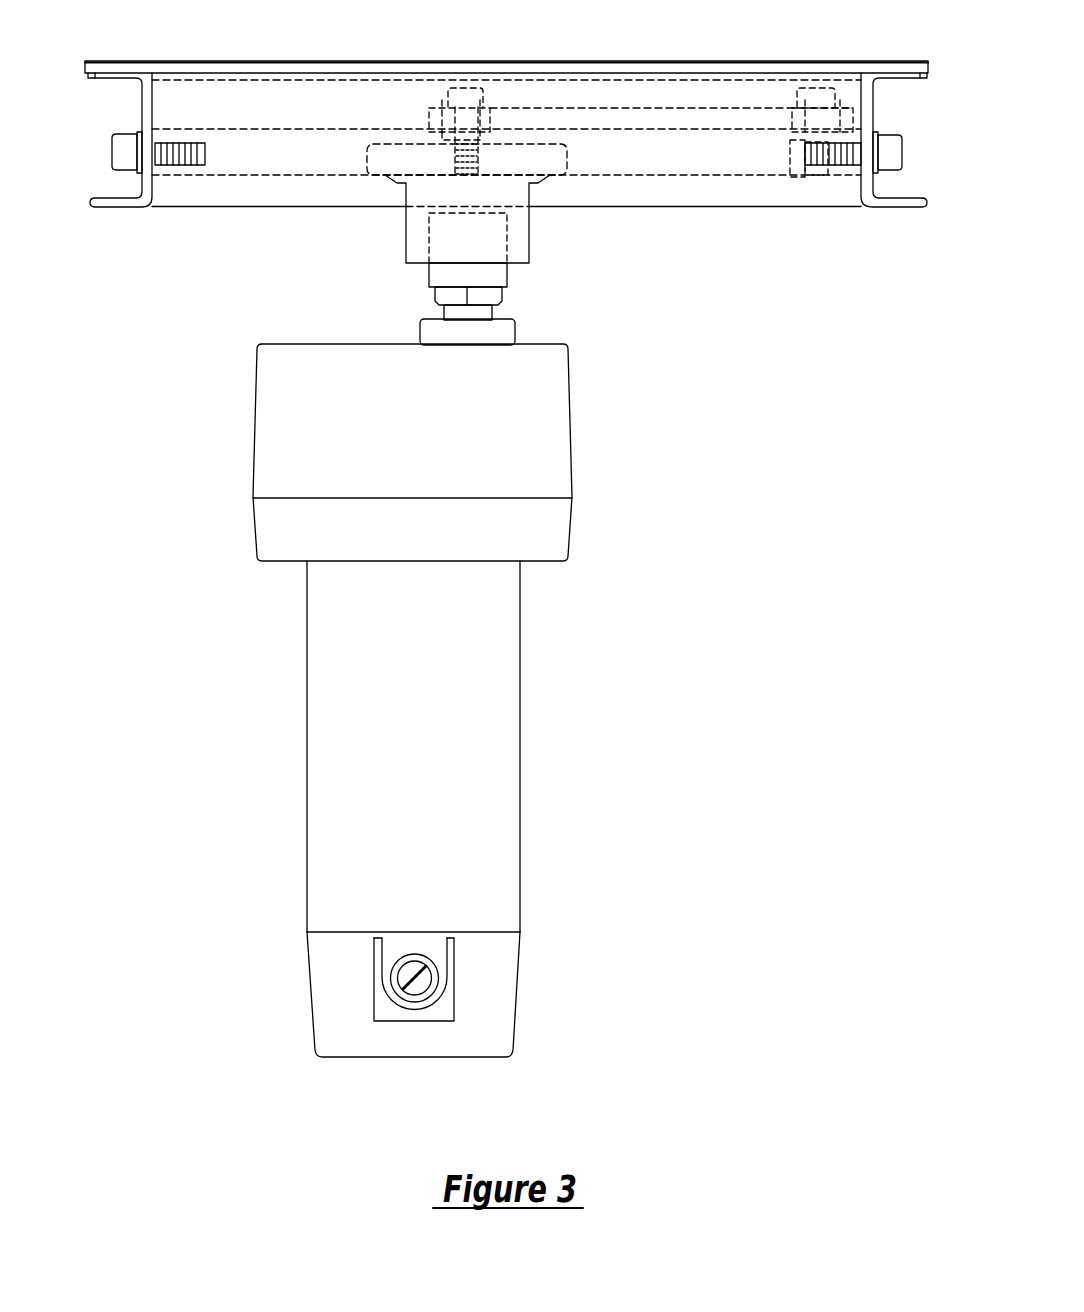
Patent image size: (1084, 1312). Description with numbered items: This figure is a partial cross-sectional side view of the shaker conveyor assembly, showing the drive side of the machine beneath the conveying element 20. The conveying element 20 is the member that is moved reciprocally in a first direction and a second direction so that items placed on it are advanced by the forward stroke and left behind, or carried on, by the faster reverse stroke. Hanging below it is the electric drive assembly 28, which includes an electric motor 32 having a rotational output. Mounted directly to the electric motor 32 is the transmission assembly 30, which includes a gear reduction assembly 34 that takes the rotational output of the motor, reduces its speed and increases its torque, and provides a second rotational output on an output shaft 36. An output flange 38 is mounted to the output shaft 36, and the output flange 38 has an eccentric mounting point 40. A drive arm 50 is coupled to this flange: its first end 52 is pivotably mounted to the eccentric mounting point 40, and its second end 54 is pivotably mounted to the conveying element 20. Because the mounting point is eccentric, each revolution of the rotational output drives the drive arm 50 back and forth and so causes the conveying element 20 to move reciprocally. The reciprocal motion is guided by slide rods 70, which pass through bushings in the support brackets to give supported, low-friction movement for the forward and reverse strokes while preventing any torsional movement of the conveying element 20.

The conveying element 20 is at (150, 230).
The electric drive assembly 28 is at (283, 727).
The transmission assembly 30 is at (578, 565).
The electric motor 32 is at (522, 849).
The gear reduction assembly 34 is at (570, 433).
The output shaft 36 is at (493, 313).
The output flange 38 is at (533, 240).
The eccentric mounting point 40 is at (490, 110).
The drive arm 50 is at (600, 107).
The first end 52 is at (428, 112).
The second end 54 is at (853, 110).
The slide rods 70 is at (250, 177).